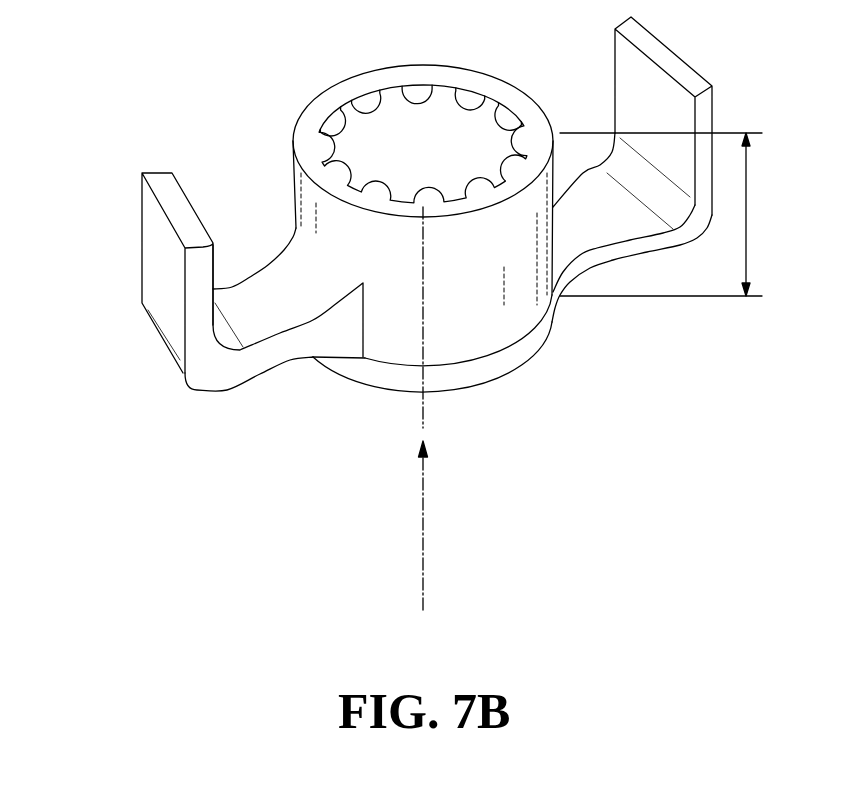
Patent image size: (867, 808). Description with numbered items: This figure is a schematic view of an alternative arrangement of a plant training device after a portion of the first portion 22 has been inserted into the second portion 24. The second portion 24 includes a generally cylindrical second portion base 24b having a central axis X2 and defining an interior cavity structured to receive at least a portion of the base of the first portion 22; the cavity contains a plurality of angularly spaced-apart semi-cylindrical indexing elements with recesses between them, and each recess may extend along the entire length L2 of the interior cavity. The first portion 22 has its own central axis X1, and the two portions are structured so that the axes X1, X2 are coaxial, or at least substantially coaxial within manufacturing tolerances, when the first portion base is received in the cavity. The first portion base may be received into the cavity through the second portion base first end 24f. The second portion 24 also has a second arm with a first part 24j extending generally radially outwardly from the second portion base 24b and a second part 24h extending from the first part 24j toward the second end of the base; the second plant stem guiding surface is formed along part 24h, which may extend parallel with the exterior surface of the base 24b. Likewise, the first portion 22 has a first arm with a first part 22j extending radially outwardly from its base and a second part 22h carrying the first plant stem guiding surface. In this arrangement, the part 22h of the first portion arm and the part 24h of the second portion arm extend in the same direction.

The first portion 22 is at (317, 397).
The second part of the first arm 22h is at (627, 107).
The first part of the first arm 22j is at (613, 222).
The second portion 24 is at (508, 368).
The second part of the second arm 24h is at (160, 268).
The first part of the second arm 24j is at (277, 285).
The second portion base 24b is at (520, 318).
The first end of the second portion base 24f is at (513, 350).
The central axis of the first portion X1 is at (425, 525).
The central axis of the second portion base X2 is at (423, 406).
The length of the second portion base interior cavity L2 is at (661, 214).